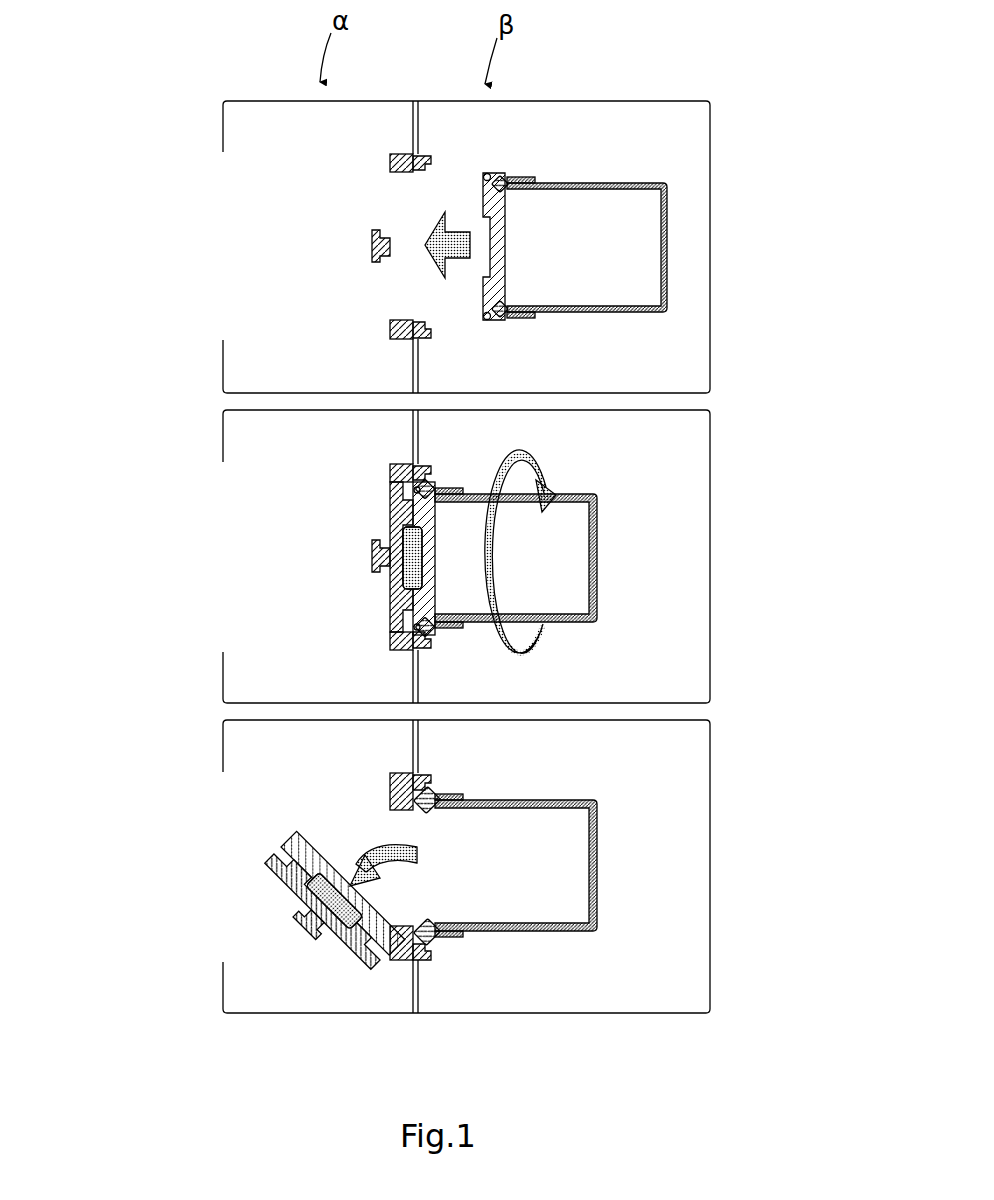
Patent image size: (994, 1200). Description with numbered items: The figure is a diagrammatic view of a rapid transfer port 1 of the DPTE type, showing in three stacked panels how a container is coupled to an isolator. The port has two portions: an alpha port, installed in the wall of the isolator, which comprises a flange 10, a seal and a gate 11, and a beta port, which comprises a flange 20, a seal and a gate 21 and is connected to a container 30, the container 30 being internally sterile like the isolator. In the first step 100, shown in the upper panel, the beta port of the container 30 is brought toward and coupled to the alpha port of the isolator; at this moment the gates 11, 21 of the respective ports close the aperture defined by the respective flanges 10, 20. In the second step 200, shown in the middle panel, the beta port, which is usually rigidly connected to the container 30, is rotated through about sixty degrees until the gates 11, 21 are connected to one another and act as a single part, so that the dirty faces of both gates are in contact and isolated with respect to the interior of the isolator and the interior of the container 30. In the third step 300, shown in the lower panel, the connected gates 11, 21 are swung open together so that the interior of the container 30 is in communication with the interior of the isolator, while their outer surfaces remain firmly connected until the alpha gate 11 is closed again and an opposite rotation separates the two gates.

The partition wall / sliding port 1 is at (412, 76).
The flange 10 is at (390, 172).
The gate 11 is at (390, 283).
The flange 20 is at (503, 175).
The gate 21 is at (483, 208).
The container 30 is at (710, 243).
The first step 100 is at (381, 247).
The second step 200 is at (381, 556).
The third step 300 is at (381, 866).